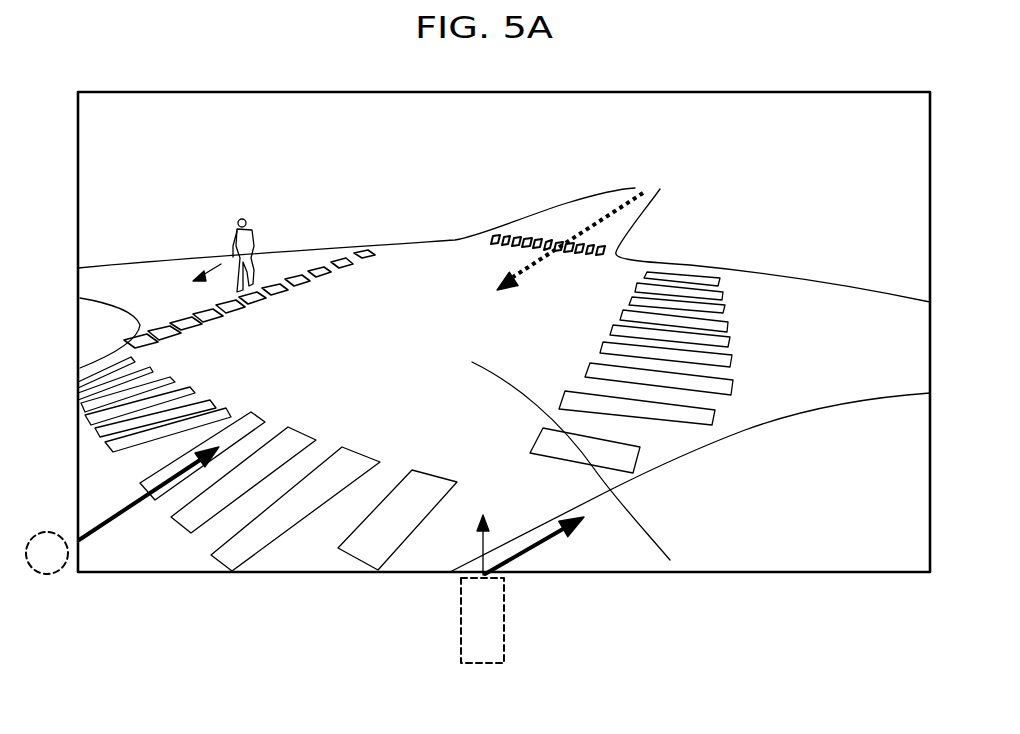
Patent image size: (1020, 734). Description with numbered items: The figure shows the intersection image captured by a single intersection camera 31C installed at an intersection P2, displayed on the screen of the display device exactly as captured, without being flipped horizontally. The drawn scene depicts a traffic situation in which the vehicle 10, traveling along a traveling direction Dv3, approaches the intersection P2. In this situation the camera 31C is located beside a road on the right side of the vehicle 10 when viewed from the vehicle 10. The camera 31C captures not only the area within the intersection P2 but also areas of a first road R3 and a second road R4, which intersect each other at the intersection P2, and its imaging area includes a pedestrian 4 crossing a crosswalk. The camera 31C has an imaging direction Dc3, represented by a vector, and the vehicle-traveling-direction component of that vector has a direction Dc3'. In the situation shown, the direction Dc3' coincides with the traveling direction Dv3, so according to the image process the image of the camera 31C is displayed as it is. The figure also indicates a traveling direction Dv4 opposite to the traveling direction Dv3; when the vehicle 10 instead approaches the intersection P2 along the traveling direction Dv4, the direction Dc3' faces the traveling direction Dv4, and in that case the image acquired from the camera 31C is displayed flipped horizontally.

The pedestrian 4 is at (252, 231).
The vehicle 10 is at (46, 575).
The camera 31C is at (504, 630).
The first road R3 is at (618, 226).
The second road R4 is at (97, 288).
The traveling direction Dv3 is at (118, 514).
The traveling direction Dv4 is at (597, 228).
The imaging direction Dc3 is at (427, 578).
The direction of the vehicle-traveling-direction component Dc3' is at (621, 620).
The intersection P2 is at (670, 560).